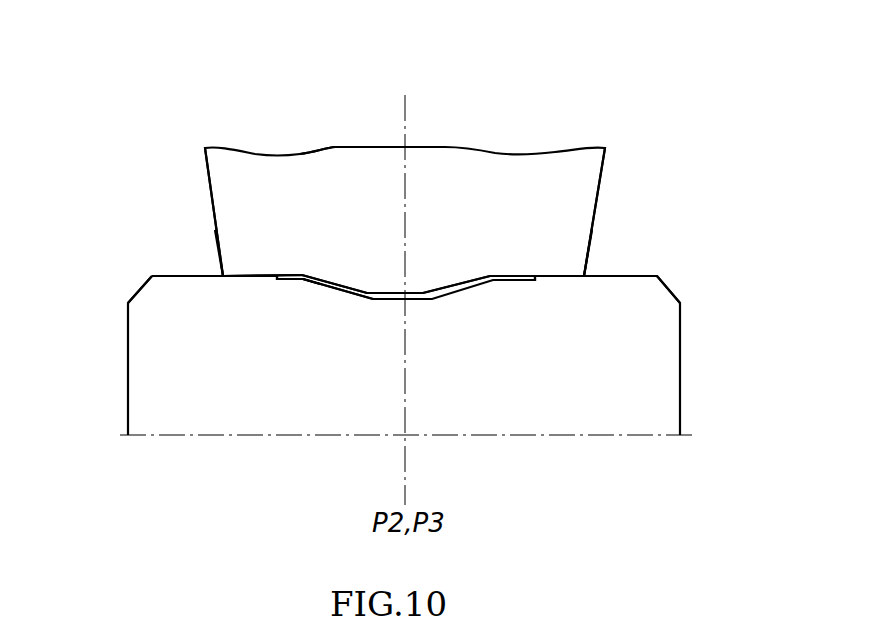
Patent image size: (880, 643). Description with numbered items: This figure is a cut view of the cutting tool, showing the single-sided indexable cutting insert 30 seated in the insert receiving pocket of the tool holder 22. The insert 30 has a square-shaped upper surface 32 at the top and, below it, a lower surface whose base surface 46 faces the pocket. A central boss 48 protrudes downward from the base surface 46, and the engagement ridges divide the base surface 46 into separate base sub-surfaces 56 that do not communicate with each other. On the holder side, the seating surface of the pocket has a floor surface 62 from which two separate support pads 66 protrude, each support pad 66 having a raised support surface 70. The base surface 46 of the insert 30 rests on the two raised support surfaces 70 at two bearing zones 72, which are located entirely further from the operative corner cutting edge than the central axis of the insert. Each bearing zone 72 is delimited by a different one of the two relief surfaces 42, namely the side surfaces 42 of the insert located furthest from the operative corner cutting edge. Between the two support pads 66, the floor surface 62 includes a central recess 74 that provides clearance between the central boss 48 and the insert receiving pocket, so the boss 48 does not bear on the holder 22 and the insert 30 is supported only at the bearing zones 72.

The tool holder 22 is at (627, 384).
The cutting insert 30 is at (295, 186).
The upper surface 32 is at (355, 146).
The side surfaces 42 is at (205, 179).
The base surface 46 is at (306, 284).
The central boss 48 is at (362, 297).
The base sub-surfaces 56 is at (288, 278).
The floor surface 62 is at (160, 276).
The support pads 66 is at (222, 275).
The raised support surfaces 70 is at (266, 275).
The bearing zones 72 is at (232, 278).
The central recess 74 is at (416, 290).